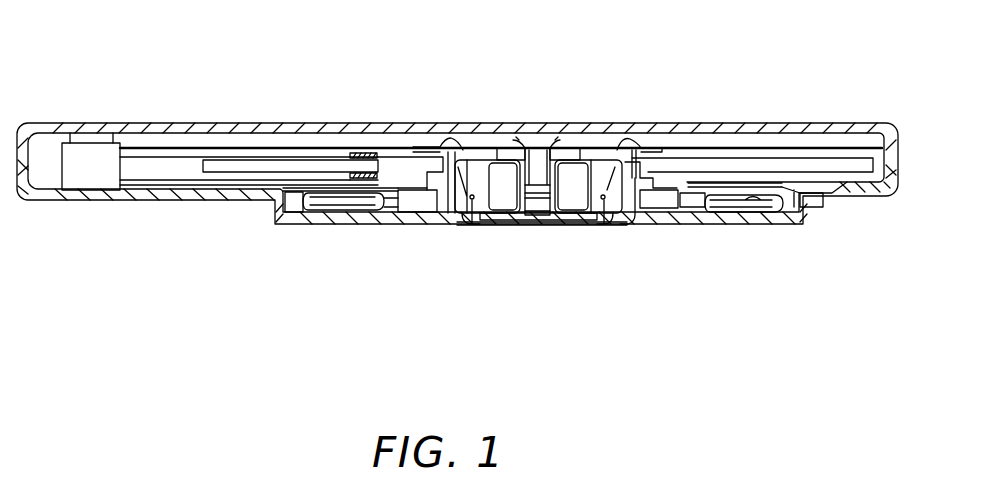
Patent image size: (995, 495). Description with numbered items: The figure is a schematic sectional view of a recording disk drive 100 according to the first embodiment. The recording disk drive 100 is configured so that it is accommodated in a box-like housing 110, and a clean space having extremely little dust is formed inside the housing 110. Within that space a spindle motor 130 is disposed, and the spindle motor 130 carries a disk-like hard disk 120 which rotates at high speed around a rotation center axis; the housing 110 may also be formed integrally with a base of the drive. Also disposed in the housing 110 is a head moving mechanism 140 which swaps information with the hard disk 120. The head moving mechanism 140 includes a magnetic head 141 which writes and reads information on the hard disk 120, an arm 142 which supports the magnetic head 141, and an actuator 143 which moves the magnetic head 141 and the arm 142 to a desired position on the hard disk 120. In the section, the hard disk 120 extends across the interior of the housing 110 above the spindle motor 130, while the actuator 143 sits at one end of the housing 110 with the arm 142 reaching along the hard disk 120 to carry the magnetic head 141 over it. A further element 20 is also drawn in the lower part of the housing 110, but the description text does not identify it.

The recording disk drive 100 is at (242, 113).
The housing 110 is at (892, 223).
The hard disk 120 is at (743, 157).
The spindle motor 130 is at (563, 228).
The head moving mechanism 140 is at (154, 143).
The magnetic head 141 is at (382, 155).
The arm 142 is at (347, 153).
The actuator 143 is at (85, 167).
The circuit board unit 20 is at (268, 222).